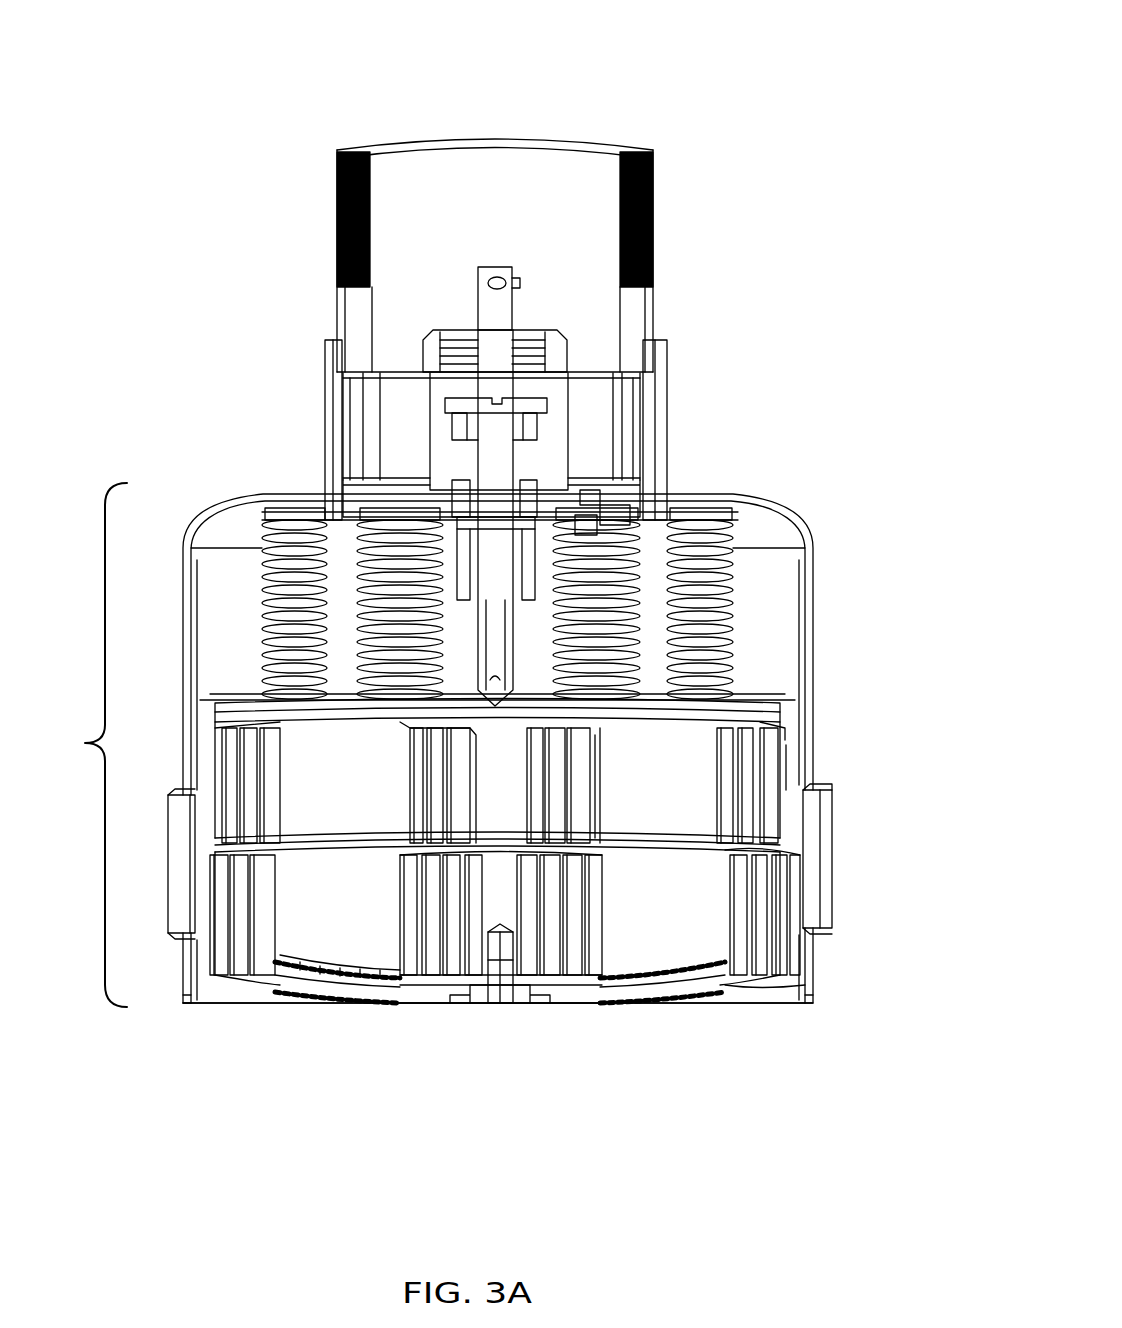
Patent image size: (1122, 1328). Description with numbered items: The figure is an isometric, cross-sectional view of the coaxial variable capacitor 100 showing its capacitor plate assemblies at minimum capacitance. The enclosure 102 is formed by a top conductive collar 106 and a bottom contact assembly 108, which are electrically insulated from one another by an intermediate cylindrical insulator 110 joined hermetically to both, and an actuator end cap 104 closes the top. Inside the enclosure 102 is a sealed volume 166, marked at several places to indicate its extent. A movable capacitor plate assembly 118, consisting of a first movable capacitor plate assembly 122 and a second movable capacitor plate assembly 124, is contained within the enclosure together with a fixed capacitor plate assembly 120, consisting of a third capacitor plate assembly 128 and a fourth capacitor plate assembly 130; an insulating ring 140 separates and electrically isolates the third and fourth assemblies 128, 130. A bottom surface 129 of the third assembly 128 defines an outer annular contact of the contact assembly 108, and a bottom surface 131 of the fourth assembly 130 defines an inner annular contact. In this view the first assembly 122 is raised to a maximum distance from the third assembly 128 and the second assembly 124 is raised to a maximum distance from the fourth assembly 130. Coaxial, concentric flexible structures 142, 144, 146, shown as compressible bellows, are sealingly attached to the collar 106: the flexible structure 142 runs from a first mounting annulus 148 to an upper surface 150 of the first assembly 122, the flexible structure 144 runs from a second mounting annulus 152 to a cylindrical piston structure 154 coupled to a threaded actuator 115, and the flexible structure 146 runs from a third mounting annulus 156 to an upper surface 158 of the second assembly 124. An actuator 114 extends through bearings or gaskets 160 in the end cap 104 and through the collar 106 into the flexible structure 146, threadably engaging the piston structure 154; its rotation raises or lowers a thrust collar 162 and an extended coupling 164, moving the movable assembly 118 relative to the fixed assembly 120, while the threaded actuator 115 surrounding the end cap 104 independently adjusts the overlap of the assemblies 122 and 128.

The coaxial variable capacitor 100 is at (684, 79).
The enclosure 102 is at (84, 745).
The actuator end cap 104 is at (567, 362).
The top conductive collar 106 is at (818, 580).
The bottom contact assembly 108 is at (817, 952).
The intermediate cylindrical insulator 110 is at (835, 874).
The actuator 114 is at (499, 266).
The threaded actuator 115 is at (652, 283).
The movable capacitor plate assembly 118 is at (792, 763).
The fixed capacitor plate assembly 120 is at (761, 998).
The first movable capacitor plate assembly 122 is at (783, 731).
The second movable capacitor plate assembly 124 is at (593, 742).
The third capacitor plate assembly 128 is at (745, 978).
The bottom surface 129 is at (218, 1005).
The fourth capacitor plate assembly 130 is at (435, 973).
The bottom surface 131 is at (572, 1005).
The insulating ring 140 is at (347, 1005).
The flexible structure 142 is at (740, 625).
The flexible structure 144 is at (630, 513).
The flexible structure 146 is at (413, 632).
The first mounting annulus 148 is at (593, 527).
The upper surface 150 is at (767, 698).
The second mounting annulus 152 is at (470, 484).
The cylindrical piston structure 154 is at (668, 442).
The third mounting annulus 156 is at (593, 503).
The upper surface 158 is at (407, 724).
The bearings or gaskets 160 is at (468, 332).
The thrust collar 162 is at (456, 432).
The extended coupling 164 is at (473, 633).
The sealed volume 166 is at (243, 674).